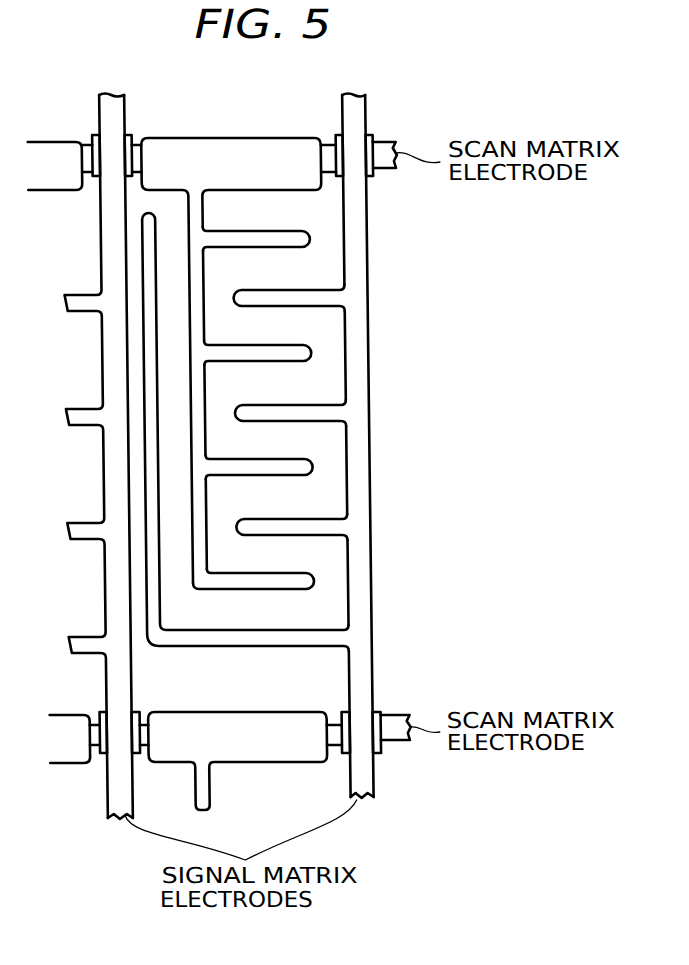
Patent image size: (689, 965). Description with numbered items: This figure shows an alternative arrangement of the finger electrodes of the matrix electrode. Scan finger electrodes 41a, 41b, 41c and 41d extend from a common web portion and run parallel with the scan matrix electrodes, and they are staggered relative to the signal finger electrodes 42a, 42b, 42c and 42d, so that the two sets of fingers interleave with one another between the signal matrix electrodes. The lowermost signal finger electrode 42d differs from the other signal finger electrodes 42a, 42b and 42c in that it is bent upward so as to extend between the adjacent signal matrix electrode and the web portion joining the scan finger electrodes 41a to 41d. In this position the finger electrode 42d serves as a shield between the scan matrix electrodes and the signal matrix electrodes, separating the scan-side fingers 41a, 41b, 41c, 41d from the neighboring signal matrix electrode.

The scan finger electrode 41a is at (308, 240).
The scan finger electrode 41b is at (308, 353).
The scan finger electrode 41c is at (307, 467).
The scan finger electrode 41d is at (306, 581).
The signal finger electrode 42a is at (273, 291).
The signal finger electrode 42b is at (282, 405).
The signal finger electrode 42c is at (283, 519).
The signal finger electrode 42d is at (264, 630).